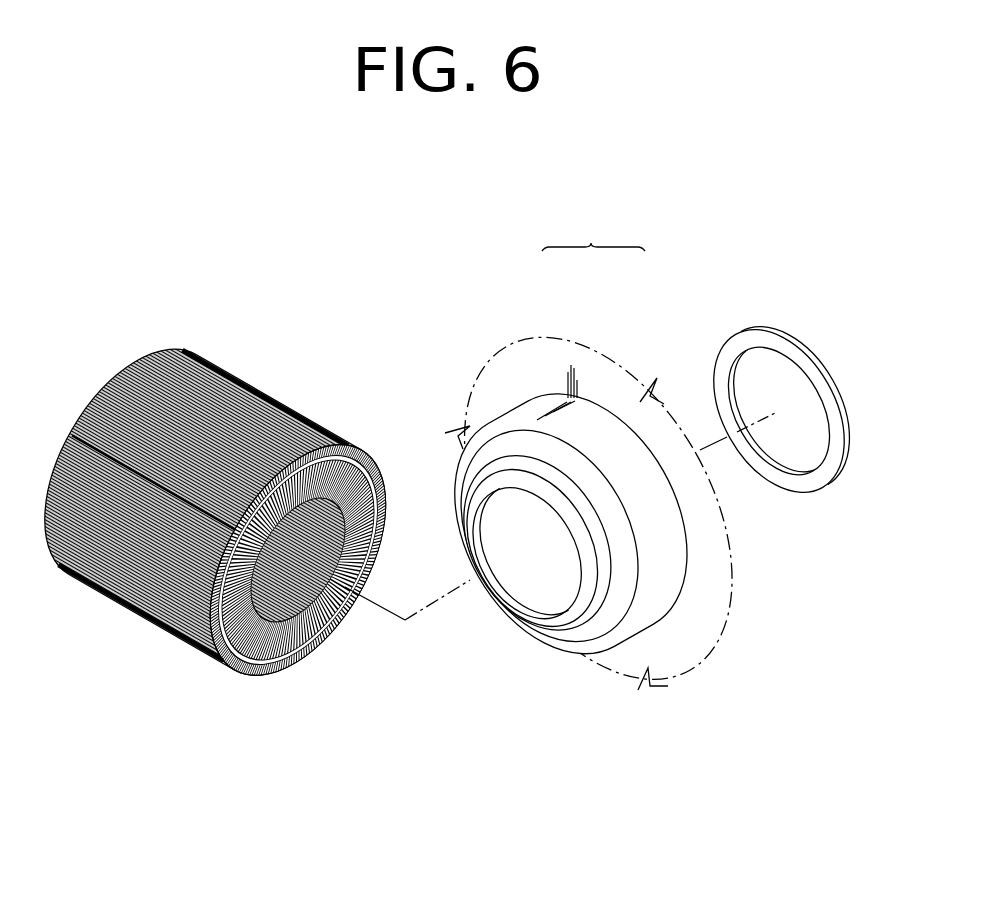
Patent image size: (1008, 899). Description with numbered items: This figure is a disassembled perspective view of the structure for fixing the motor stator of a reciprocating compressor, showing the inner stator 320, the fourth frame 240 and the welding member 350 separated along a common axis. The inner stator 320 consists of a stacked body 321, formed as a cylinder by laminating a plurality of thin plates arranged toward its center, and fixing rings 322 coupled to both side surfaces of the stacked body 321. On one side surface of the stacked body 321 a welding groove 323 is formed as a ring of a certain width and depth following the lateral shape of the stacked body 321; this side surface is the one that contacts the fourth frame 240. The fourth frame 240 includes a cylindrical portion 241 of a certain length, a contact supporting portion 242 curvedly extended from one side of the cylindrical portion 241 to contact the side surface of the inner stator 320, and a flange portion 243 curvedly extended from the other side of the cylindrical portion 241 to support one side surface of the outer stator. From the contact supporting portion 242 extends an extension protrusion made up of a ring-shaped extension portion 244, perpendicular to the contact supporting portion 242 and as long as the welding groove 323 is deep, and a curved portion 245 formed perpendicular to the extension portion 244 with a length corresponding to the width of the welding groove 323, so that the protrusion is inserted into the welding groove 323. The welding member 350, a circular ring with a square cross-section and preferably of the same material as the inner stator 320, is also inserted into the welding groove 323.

The inner stator 320 is at (250, 496).
The stacked body 321 is at (278, 402).
The fixing rings 322 is at (365, 453).
The welding groove 323 is at (253, 650).
The fourth frame 240 is at (587, 552).
The cylindrical portion 241 is at (643, 607).
The contact supporting portion 242 is at (588, 640).
The flange portion 243 is at (700, 617).
The extension portion 244 is at (562, 490).
The curved portion 245 is at (525, 487).
The welding member 350 is at (790, 322).